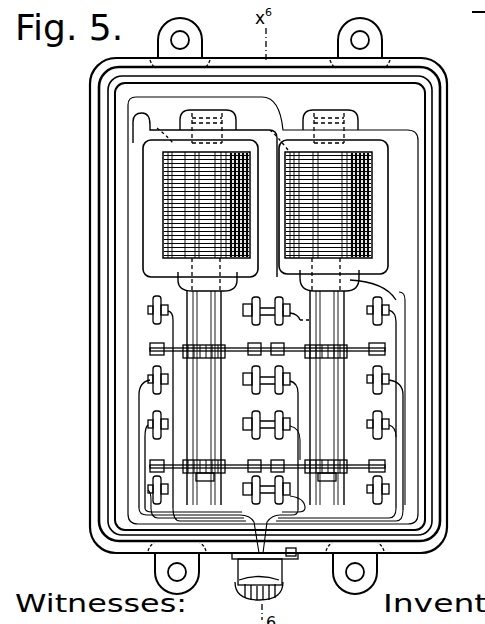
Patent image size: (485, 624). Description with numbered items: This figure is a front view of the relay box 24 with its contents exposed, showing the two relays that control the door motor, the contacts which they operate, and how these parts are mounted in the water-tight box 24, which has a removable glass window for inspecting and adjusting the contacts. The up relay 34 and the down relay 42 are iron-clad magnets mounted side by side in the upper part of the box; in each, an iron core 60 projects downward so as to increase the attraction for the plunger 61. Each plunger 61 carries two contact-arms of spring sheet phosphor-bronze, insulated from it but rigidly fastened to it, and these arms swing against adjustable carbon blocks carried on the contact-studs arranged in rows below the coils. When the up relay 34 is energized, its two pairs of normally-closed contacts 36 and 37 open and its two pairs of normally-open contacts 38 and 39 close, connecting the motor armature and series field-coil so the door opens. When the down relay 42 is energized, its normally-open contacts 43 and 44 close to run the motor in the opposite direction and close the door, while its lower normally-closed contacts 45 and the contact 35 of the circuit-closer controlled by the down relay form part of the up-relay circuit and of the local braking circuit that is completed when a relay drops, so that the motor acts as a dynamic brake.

The box 24 is at (438, 156).
The up relay 34 is at (372, 208).
The down relay 42 is at (248, 198).
The iron core 60 is at (195, 150).
The plunger 61 is at (196, 303).
The contact of the circuit-closer controlled by the down relay 35 is at (248, 358).
The normally-closed contacts of the up relay 36 is at (290, 479).
The normally-closed contacts of the up relay 37 is at (284, 360).
The normally-open contacts of the up relay 38 is at (322, 441).
The normally-open contacts of the up relay 39 is at (374, 324).
The normally-open contacts of the down relay 43 is at (158, 324).
The normally-open contacts of the down relay 44 is at (222, 459).
The lower normally-closed contacts of the down relay 45 is at (167, 498).